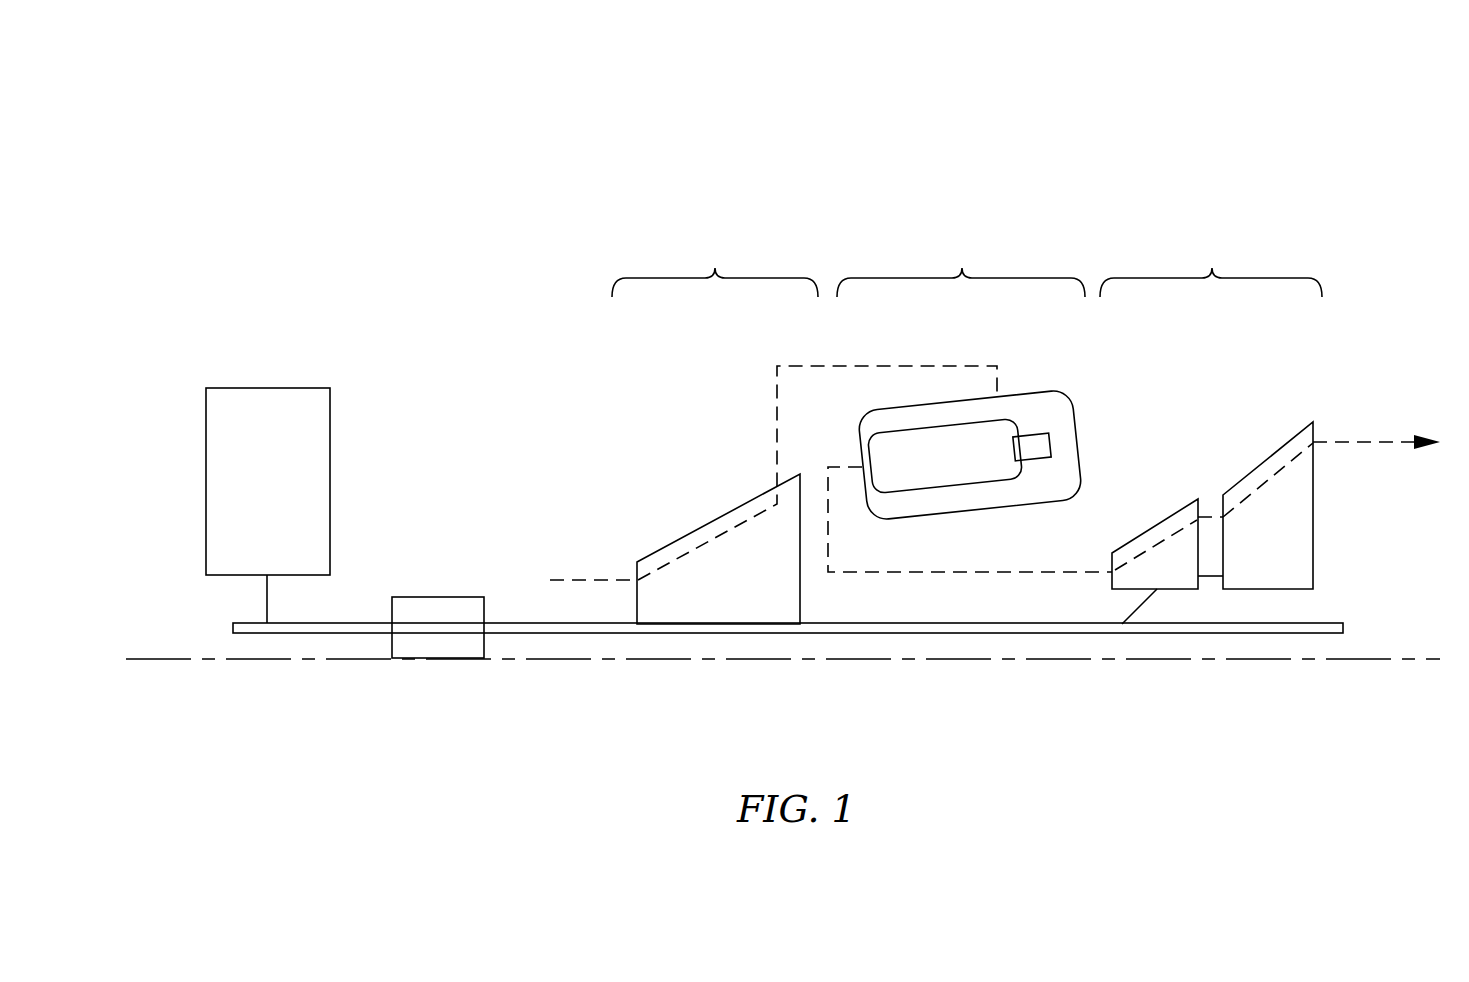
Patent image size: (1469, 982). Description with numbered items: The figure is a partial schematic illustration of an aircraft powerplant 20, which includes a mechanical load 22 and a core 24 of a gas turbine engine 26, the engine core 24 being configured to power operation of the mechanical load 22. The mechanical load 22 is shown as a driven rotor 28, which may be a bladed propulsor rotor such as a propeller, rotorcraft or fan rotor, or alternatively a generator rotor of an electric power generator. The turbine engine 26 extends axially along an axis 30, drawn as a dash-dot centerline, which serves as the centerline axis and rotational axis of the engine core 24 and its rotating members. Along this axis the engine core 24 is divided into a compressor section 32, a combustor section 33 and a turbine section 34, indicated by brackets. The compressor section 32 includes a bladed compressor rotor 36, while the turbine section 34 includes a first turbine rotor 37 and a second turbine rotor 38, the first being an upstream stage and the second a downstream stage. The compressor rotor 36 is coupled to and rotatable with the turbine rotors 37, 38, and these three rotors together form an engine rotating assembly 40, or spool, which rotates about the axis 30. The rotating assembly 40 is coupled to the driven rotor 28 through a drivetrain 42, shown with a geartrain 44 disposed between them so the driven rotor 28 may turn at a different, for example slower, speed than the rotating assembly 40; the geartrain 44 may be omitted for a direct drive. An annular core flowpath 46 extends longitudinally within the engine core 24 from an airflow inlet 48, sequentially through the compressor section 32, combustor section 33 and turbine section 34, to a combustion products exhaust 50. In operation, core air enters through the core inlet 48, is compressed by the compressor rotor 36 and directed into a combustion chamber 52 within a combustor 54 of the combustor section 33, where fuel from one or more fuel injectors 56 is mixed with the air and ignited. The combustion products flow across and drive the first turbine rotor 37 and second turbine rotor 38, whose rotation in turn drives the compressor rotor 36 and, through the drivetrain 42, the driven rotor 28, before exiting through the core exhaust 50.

The aircraft powerplant 20 is at (190, 118).
The gas turbine engine 26 is at (188, 116).
The mechanical load 22 is at (268, 449).
The engine core 24 is at (1061, 226).
The rotor 28 is at (253, 497).
The axis 30 is at (155, 659).
The compressor section 32 is at (715, 267).
The combustor section 33 is at (961, 267).
The turbine section 34 is at (1211, 267).
The compressor rotor 36 is at (705, 596).
The first turbine rotor 37 is at (1153, 583).
The second turbine rotor 38 is at (1257, 583).
The engine rotating assembly 40 is at (1330, 606).
The drivetrain 42 is at (438, 573).
The geartrain 44 is at (424, 643).
The core flowpath 46 is at (775, 418).
The airflow inlet 48 is at (550, 580).
The combustion products exhaust 50 is at (1440, 442).
The combustion chamber 52 is at (924, 472).
The combustor 54 is at (929, 508).
The fuel injector 56 is at (1052, 445).